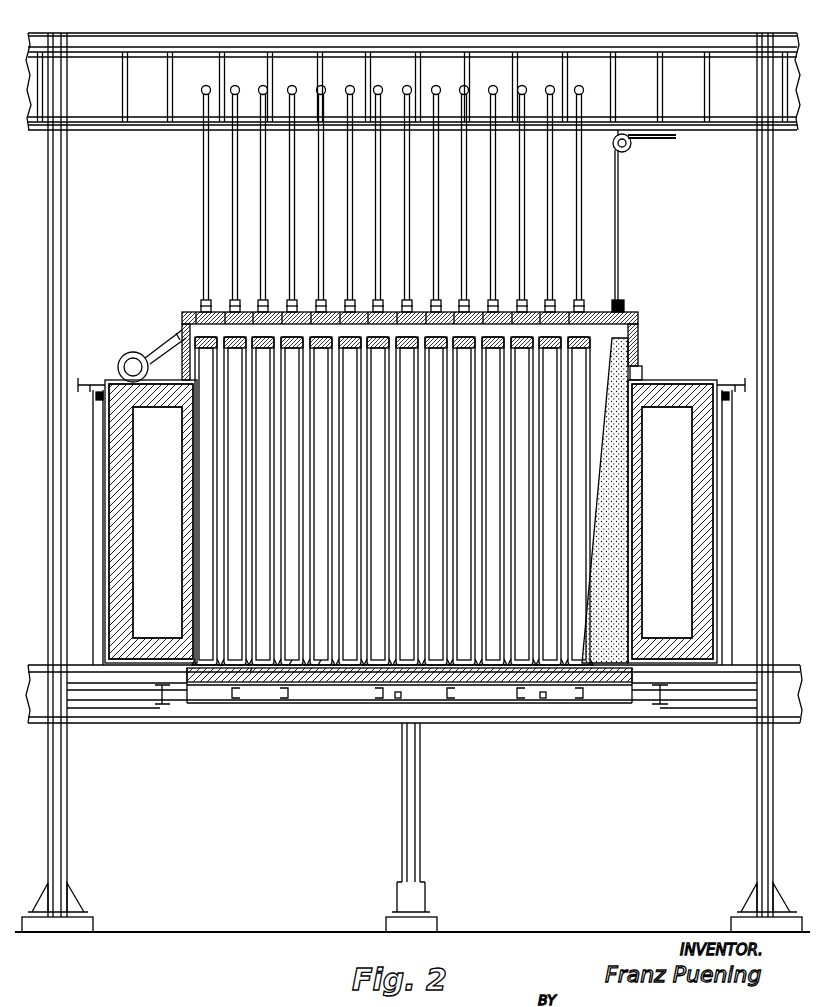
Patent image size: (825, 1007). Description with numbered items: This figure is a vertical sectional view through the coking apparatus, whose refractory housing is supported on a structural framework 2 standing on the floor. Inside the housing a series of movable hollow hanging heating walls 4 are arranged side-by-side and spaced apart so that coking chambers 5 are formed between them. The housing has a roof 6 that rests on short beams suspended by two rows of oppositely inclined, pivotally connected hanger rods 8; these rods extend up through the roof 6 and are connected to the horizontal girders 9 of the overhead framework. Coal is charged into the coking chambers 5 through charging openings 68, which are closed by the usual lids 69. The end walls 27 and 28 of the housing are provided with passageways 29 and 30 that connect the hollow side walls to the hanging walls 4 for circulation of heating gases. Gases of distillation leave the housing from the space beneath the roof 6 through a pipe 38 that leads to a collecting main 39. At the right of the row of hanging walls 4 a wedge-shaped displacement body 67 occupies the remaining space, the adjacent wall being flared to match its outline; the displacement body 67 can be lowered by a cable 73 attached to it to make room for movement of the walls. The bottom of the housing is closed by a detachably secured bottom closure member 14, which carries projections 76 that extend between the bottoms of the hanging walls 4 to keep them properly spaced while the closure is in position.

The structural framework 2 is at (60, 830).
The hanging heating walls 4 is at (240, 594).
The coking chambers 5 is at (250, 485).
The roof 6 is at (622, 306).
The hanger rods 8 is at (232, 207).
The horizontal girders 9 is at (150, 72).
The bottom closure member 14 is at (490, 683).
The end wall 27 is at (130, 449).
The end wall 28 is at (700, 436).
The passageway 29 is at (150, 562).
The passageway 30 is at (680, 522).
The pipe 38 is at (170, 336).
The collecting main 39 is at (120, 360).
The displacement body 67 is at (642, 376).
The charging openings 68 is at (442, 312).
The lids 69 is at (310, 312).
The cable 73 is at (620, 255).
The projections 76 is at (312, 658).